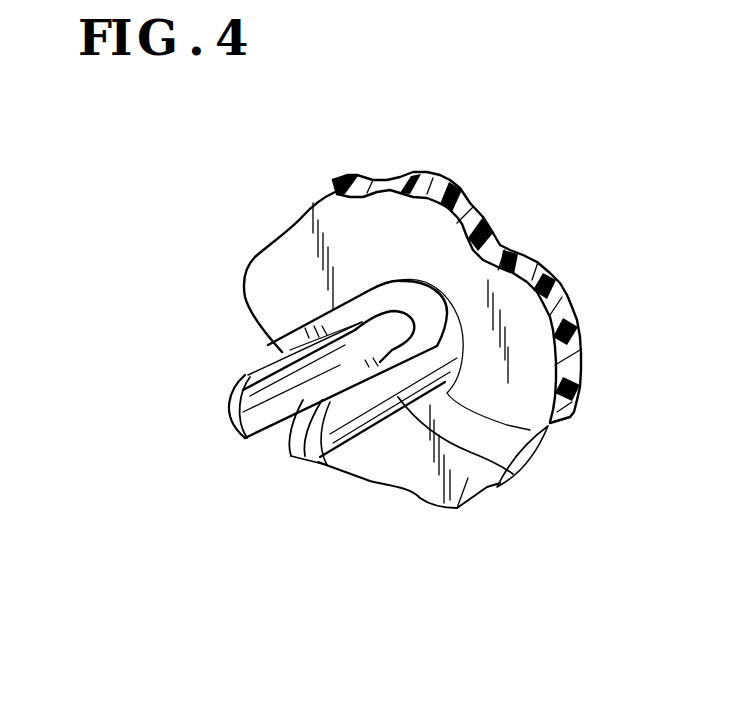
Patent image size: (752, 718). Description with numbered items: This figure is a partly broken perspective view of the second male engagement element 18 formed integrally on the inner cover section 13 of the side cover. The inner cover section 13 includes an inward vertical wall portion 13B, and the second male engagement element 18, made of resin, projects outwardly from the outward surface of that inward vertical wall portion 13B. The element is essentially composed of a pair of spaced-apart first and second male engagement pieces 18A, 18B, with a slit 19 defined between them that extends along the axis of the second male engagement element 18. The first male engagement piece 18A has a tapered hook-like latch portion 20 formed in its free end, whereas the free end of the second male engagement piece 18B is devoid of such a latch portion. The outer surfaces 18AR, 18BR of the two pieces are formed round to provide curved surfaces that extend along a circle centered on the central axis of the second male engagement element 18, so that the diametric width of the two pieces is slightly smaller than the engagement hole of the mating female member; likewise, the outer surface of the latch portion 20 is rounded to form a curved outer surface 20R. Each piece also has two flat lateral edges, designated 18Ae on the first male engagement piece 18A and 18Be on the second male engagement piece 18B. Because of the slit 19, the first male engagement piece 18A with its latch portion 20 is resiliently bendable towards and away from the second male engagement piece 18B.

The inner cover section 13 is at (452, 181).
The inward vertical wall portion 13B is at (458, 508).
The second male engagement element 18 is at (322, 310).
The second male engagement piece 18B is at (305, 340).
The outer surface of second male engagement piece 18BR is at (292, 350).
The flat lateral edges of second male engagement piece 18Be is at (278, 347).
The hook-like latch portion 20 is at (268, 354).
The curved outer surface of latch portion 20R is at (222, 377).
The slit 19 is at (289, 432).
The first male engagement piece 18A is at (538, 430).
The outer surface of first male engagement piece 18AR is at (497, 487).
The flat lateral edges of first male engagement piece 18Ae is at (397, 353).